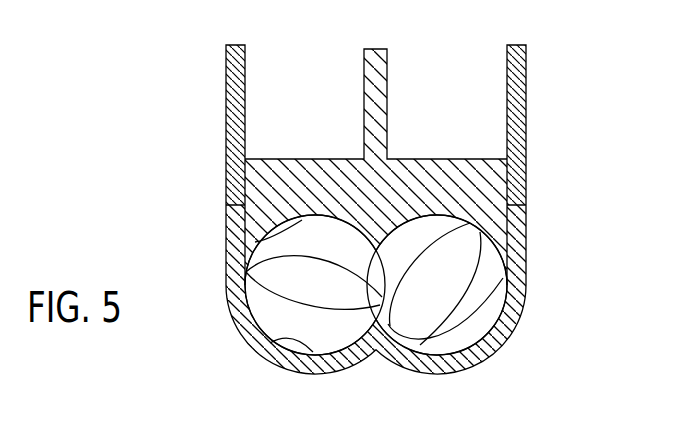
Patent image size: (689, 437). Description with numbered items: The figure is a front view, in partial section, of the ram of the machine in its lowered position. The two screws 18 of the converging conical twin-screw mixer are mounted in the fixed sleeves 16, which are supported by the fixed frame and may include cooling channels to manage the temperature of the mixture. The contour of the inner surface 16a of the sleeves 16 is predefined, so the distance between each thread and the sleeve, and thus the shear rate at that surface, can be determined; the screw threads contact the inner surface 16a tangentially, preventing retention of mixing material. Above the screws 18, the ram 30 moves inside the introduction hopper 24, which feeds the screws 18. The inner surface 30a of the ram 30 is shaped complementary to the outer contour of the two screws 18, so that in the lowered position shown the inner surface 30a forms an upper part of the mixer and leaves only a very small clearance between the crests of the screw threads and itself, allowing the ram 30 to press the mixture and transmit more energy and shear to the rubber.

The introduction hopper 24 is at (234, 112).
The ram 30 is at (444, 180).
The inner surface of the ram 30a is at (262, 243).
The fixed sleeves 16 is at (518, 232).
The inner surface of the sleeves 16a is at (267, 353).
The screws 18 is at (355, 297).